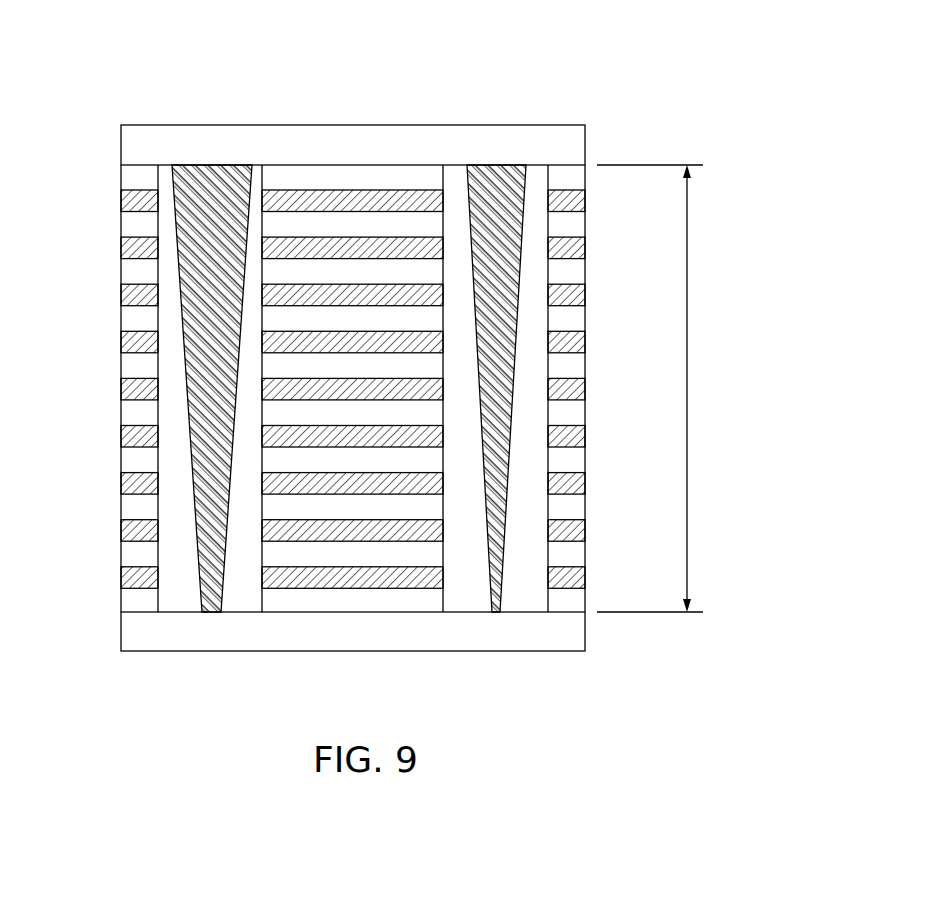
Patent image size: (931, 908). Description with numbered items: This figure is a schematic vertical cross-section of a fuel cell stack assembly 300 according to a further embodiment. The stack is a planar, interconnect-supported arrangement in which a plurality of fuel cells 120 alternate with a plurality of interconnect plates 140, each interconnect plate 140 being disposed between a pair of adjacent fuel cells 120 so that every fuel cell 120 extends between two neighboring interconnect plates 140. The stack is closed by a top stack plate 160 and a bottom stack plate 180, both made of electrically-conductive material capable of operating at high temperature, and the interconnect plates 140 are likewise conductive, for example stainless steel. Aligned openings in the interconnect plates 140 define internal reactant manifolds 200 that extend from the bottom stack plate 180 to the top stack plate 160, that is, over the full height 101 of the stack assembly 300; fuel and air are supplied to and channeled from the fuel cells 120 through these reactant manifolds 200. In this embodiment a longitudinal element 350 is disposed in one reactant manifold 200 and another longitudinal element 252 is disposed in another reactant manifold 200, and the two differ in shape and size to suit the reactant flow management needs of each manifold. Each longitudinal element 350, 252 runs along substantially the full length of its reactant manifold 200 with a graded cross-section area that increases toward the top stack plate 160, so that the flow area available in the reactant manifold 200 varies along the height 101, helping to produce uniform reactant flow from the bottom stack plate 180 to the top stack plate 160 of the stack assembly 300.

The fuel cell stack assembly 300 is at (623, 50).
The top stack plate 160 is at (375, 130).
The bottom stack plate 180 is at (513, 642).
The reactant manifold 200 is at (177, 325).
The fuel cell 120 is at (422, 223).
The interconnect plate 140 is at (306, 197).
The longitudinal element 350 is at (207, 280).
The tapered contact 252 is at (515, 233).
The height 101 is at (688, 380).